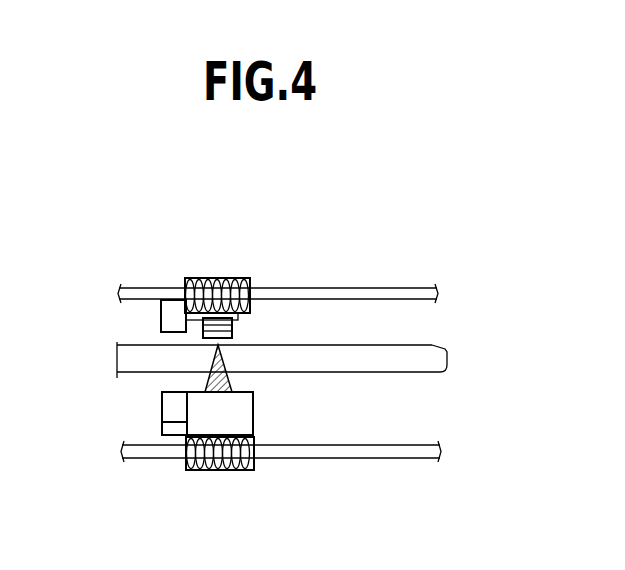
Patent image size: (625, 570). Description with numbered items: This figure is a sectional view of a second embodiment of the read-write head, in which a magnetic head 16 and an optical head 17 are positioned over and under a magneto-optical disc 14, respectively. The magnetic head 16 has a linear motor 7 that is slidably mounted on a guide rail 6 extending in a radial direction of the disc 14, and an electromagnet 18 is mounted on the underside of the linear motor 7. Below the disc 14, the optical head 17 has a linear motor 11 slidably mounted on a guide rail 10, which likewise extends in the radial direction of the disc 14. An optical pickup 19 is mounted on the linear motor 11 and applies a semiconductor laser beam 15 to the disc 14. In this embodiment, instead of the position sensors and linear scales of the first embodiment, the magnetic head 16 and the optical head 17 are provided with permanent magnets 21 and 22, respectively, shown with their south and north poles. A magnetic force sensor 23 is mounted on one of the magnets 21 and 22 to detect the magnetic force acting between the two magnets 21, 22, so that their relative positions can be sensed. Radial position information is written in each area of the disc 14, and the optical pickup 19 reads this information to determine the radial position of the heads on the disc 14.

The guide rail 6 is at (437, 293).
The linear motor 7 is at (252, 283).
The guide rail 10 is at (440, 452).
The linear motor 11 is at (254, 465).
The magneto-optical disc 14 is at (432, 347).
The semiconductor laser beam 15 is at (210, 376).
The magnetic head 16 is at (218, 274).
The optical head 17 is at (207, 483).
The electromagnet 18 is at (232, 328).
The optical pickup 19 is at (253, 415).
The permanent magnet 21 is at (161, 313).
The permanent magnet 22 is at (162, 417).
The magnetic force sensor 23 is at (162, 427).